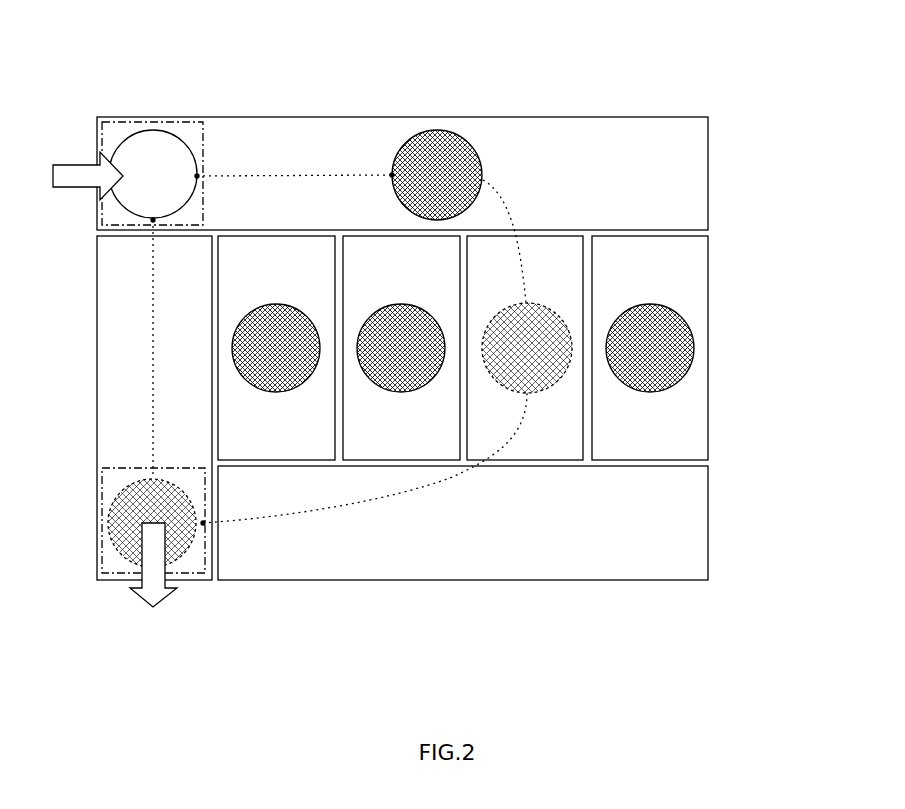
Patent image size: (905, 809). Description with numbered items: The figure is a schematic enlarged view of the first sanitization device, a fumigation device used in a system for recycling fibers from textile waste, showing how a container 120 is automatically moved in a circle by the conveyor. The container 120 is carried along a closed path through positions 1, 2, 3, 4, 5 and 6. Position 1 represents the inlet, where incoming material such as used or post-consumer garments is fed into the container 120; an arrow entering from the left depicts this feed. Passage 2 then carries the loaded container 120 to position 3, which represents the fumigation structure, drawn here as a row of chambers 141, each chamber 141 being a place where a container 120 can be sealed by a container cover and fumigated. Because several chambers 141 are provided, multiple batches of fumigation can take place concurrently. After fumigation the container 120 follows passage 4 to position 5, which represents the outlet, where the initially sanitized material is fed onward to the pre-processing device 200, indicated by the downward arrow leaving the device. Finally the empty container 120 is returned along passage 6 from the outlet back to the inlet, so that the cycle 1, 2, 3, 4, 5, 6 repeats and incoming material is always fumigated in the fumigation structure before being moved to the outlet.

The container 120 is at (184, 142).
The chamber 141 is at (685, 289).
The pre-processing device 200 is at (153, 559).
The inlet position 1 is at (153, 175).
The passage 2 is at (294, 157).
The fumigation structure position 3 is at (527, 286).
The passage 4 is at (364, 459).
The outlet position 5 is at (152, 523).
The passage 6 is at (173, 348).